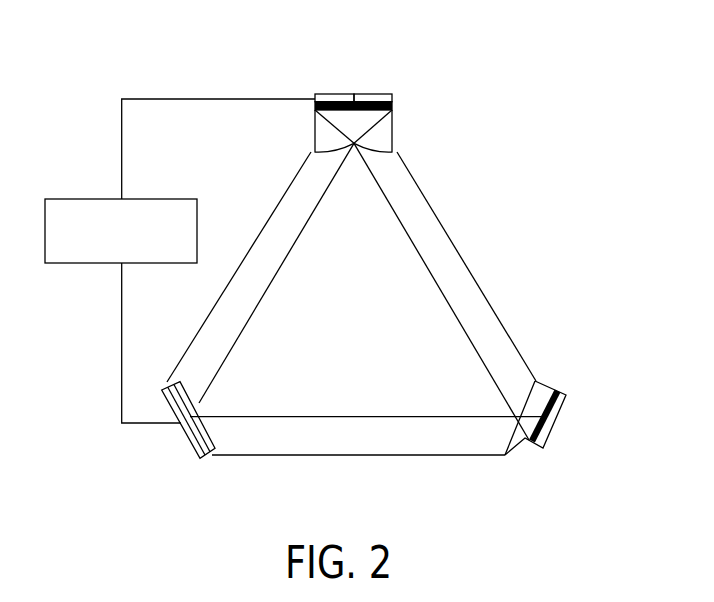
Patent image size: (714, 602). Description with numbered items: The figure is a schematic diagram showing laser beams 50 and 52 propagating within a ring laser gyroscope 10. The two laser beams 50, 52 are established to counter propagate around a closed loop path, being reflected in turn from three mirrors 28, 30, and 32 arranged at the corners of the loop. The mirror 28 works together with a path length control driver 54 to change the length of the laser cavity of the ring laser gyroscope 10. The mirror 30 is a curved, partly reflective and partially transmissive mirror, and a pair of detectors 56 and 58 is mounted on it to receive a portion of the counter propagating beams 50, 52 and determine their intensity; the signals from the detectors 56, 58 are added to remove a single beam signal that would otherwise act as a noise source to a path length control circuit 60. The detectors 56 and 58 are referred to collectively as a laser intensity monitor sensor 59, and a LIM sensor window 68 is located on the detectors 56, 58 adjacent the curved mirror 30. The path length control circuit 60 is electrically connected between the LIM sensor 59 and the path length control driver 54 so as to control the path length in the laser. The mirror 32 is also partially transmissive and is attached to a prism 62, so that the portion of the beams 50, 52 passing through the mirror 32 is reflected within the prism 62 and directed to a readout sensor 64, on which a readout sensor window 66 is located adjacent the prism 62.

The ring laser gyroscope 10 is at (485, 248).
The mirror 28 is at (186, 421).
The mirror 30 is at (354, 144).
The mirror 32 is at (497, 438).
The laser beam 50 is at (258, 308).
The laser beam 52 is at (436, 295).
The path length control driver 54 is at (186, 438).
The detector 56 is at (333, 92).
The detector 58 is at (375, 92).
The laser intensity monitor (LIM) sensor 59 is at (402, 121).
The path length control circuit 60 is at (157, 199).
The prism 62 is at (532, 415).
The readout sensor 64 is at (558, 409).
The readout sensor window 66 is at (526, 442).
The LIM sensor window 68 is at (392, 106).